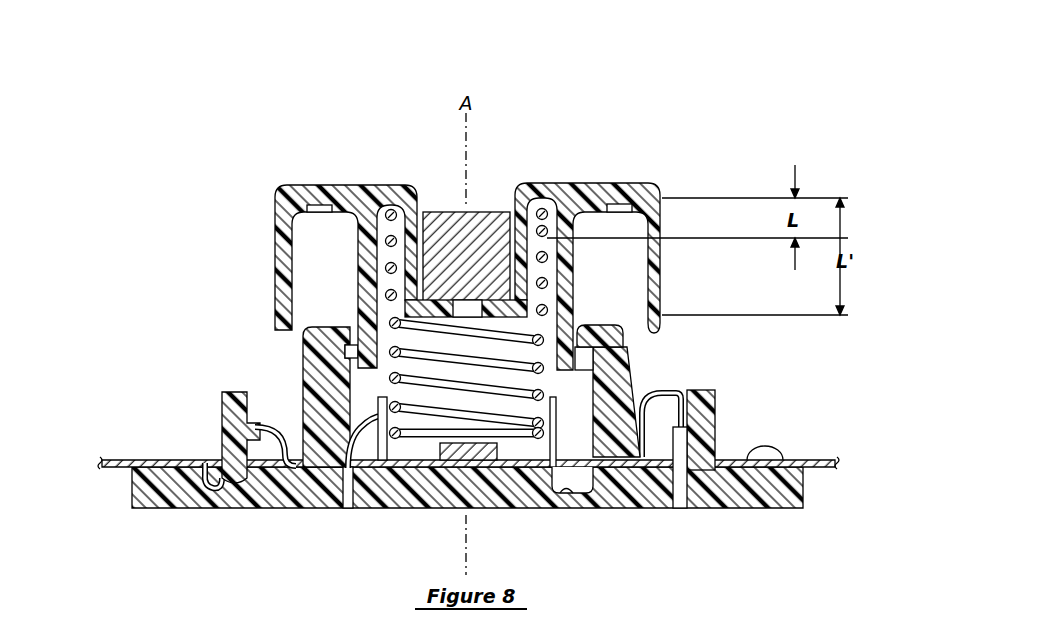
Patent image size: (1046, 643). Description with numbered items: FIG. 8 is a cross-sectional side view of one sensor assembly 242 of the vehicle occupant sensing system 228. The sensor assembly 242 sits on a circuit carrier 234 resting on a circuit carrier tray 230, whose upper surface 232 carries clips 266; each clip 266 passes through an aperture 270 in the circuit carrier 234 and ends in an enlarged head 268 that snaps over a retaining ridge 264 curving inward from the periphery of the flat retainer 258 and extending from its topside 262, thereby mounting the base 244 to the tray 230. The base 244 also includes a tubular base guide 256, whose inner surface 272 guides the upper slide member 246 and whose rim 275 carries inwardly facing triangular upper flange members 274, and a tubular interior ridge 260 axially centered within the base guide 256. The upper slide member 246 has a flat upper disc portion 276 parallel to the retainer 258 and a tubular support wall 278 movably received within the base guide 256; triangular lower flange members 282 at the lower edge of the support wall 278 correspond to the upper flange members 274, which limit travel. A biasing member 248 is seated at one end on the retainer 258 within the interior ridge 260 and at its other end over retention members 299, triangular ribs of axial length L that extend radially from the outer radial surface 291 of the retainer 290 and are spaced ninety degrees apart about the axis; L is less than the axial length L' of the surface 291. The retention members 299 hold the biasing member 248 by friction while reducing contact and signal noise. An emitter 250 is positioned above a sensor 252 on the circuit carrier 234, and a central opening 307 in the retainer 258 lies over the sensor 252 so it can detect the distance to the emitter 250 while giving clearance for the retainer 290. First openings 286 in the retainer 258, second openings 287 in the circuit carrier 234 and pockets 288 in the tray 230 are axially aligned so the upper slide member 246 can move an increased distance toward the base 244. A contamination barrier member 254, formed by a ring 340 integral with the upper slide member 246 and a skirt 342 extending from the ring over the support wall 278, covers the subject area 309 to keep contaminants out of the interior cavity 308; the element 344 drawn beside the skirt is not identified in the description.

The vehicle occupant sensing system 228 is at (751, 96).
The circuit carrier tray 230 is at (738, 495).
The upper surface 232 is at (790, 495).
The circuit carrier 234 is at (818, 460).
The sensor assembly 242 is at (190, 290).
The base 244 is at (295, 352).
The upper slide member 246 is at (663, 180).
The biasing member 248 is at (297, 333).
The emitter 250 is at (483, 230).
The sensor 252 is at (495, 462).
The contamination barrier member 254 is at (270, 232).
The base guide 256 is at (612, 378).
The retainer 258 is at (668, 392).
The interior ridge 260 is at (353, 472).
The topside 262 is at (298, 385).
The retaining ridges 264 is at (256, 443).
The clips 266 is at (704, 432).
The enlarged head 268 is at (700, 398).
The apertures 270 is at (212, 462).
The inner surface 272 is at (305, 372).
The upper flange members 274 is at (600, 295).
The rim 275 is at (615, 315).
The upper disc portion 276 is at (553, 190).
The support wall 278 is at (567, 236).
The lower flange members 282 is at (605, 338).
The first openings 286 is at (378, 472).
The second openings 287 is at (583, 495).
The pockets 288 is at (572, 494).
The retainer 290 is at (407, 277).
The outer radial surface 291 is at (420, 212).
The retention members 299 is at (379, 202).
The opening 307 is at (433, 470).
The interior cavity 308 is at (268, 505).
The subject area 309 is at (348, 328).
The ring 340 is at (312, 192).
The skirt 342 is at (280, 208).
The cap cavity 344 is at (312, 252).